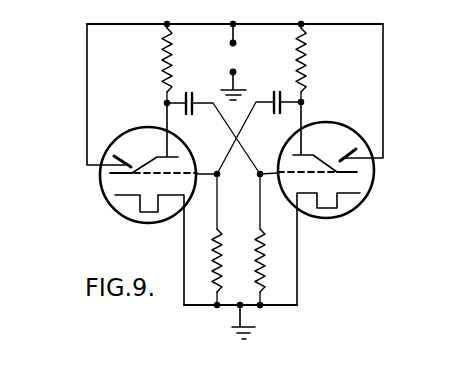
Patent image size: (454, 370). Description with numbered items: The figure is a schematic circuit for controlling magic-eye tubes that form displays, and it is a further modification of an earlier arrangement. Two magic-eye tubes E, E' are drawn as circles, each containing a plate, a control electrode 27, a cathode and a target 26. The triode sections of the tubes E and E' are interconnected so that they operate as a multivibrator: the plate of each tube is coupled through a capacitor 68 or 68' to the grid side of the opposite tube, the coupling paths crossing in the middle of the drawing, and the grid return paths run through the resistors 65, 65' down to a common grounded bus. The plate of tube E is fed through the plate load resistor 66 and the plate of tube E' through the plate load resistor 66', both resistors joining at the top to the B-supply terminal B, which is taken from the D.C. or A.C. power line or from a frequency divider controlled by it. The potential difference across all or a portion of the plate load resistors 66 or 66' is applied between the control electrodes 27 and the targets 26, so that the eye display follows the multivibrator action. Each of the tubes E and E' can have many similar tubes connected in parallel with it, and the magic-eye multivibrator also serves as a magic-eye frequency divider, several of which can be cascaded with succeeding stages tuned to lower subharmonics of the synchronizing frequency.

The target 26 is at (128, 163).
The control electrode 27 is at (118, 174).
The resistor 65 is at (204, 239).
The resistor 65' is at (276, 239).
The plate load resistor 66 is at (144, 63).
The plate load resistor 66' is at (326, 63).
The capacitor 68 is at (204, 90).
The capacitor 68' is at (264, 90).
The B-supply B is at (233, 60).
The magic-eye tube E is at (138, 204).
The magic-eye tube E' is at (331, 203).